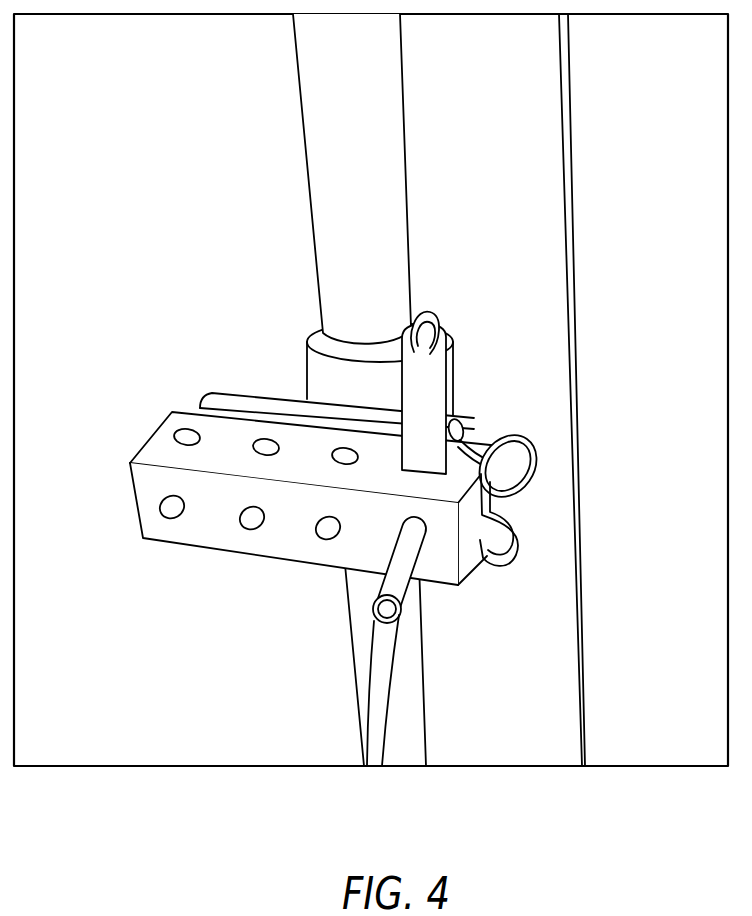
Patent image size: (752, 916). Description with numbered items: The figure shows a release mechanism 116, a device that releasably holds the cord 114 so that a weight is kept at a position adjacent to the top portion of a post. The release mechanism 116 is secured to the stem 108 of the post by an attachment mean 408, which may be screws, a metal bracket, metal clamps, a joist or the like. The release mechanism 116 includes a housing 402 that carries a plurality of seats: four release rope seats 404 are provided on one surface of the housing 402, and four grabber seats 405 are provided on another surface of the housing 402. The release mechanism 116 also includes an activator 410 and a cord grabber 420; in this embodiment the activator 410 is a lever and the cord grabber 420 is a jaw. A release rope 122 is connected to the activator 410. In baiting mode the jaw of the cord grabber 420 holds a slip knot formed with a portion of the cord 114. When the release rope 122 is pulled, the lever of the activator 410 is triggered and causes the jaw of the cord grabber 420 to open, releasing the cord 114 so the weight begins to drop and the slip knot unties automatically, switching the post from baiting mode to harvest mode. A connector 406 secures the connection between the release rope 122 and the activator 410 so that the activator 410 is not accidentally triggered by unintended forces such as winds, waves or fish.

The stem 108 is at (302, 121).
The cord 114 is at (571, 136).
The release mechanism 116 is at (304, 390).
The release rope 122 is at (378, 702).
The housing 402 is at (320, 494).
The release rope seats 404 is at (247, 516).
The grabber seats 405 is at (265, 441).
The connector 406 is at (372, 552).
The attachment mean 408 is at (305, 360).
The activator 410 is at (523, 481).
The cord grabber 420 is at (447, 343).